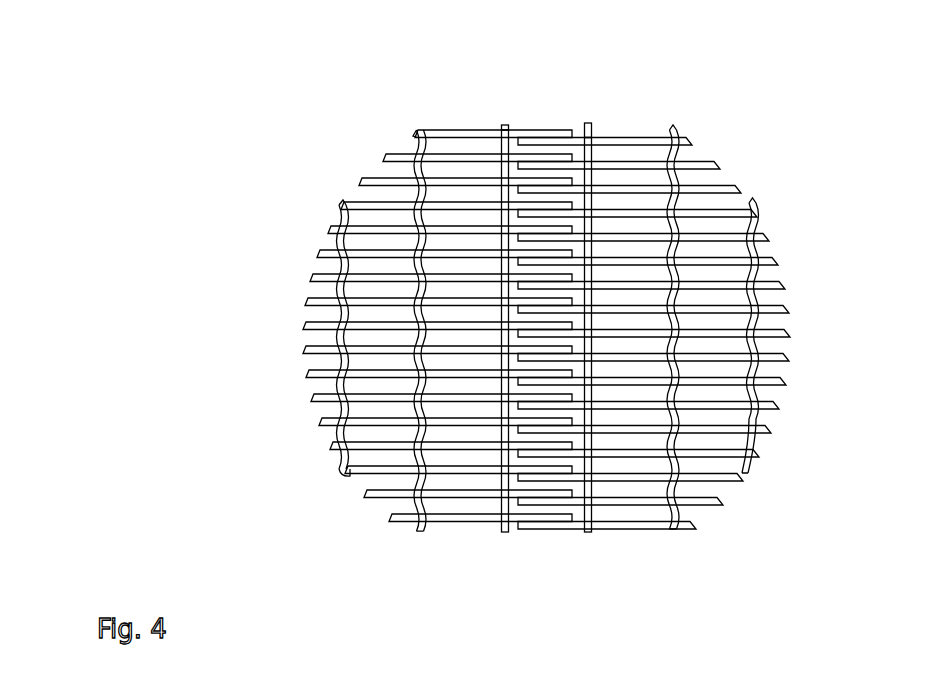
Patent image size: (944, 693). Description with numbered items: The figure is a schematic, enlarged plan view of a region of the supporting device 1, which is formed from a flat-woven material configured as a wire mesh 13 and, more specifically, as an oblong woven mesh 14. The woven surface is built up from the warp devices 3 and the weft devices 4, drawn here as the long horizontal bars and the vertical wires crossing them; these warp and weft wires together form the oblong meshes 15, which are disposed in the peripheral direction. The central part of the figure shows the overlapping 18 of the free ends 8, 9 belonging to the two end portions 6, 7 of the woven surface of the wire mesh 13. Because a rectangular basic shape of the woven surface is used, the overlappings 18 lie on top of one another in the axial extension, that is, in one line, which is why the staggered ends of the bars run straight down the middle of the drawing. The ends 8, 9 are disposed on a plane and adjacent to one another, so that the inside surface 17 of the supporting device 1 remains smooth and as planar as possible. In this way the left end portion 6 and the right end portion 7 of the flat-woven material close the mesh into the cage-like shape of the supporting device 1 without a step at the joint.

The supporting device 1 is at (110, 288).
The warp device 3 is at (318, 375).
The weft device 4 is at (420, 408).
The end portion 6 is at (351, 373).
The end portion 7 is at (603, 548).
The free end 8 is at (527, 128).
The free end 9 is at (557, 140).
The wire mesh 13 is at (382, 319).
The oblong woven mesh 14 is at (693, 318).
The oblong mesh 15 is at (358, 242).
The inside surface 17 is at (580, 410).
The overlapping 18 is at (540, 108).